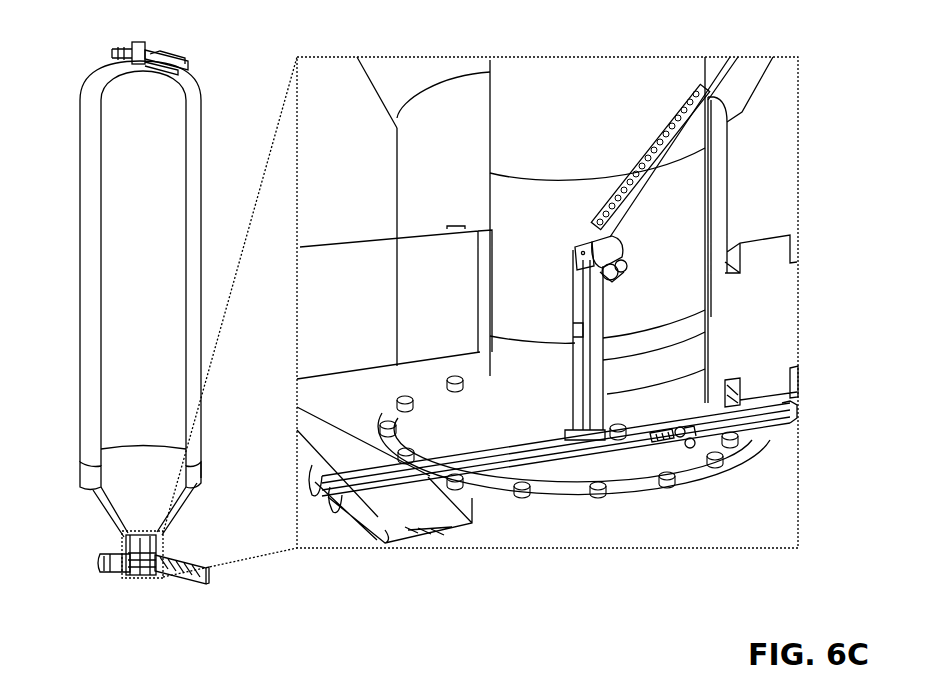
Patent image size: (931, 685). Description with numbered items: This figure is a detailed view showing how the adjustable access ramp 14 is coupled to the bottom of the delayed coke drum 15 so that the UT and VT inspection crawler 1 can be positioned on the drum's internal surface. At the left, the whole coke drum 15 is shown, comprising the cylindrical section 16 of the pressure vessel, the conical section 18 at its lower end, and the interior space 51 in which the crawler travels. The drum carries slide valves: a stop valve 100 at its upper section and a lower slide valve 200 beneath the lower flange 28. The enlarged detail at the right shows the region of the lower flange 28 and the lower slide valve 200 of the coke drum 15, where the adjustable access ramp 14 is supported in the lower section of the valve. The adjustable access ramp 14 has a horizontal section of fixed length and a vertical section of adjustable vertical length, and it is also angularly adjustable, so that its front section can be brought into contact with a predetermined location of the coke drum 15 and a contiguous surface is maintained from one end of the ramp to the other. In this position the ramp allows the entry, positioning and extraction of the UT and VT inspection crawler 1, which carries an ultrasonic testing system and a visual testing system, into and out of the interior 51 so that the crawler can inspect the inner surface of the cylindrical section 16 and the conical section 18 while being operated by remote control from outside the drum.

The UT and VT inspection crawler 1 is at (678, 446).
The adjustable access ramp 14 is at (606, 330).
The coke drum 15 is at (108, 68).
The cylindrical section 16 is at (80, 229).
The conical section 18 is at (110, 509).
The lower flange 28 is at (160, 548).
The interior 51 is at (437, 261).
The stop valve 100 is at (166, 48).
The lower slide valve 200 is at (195, 561).